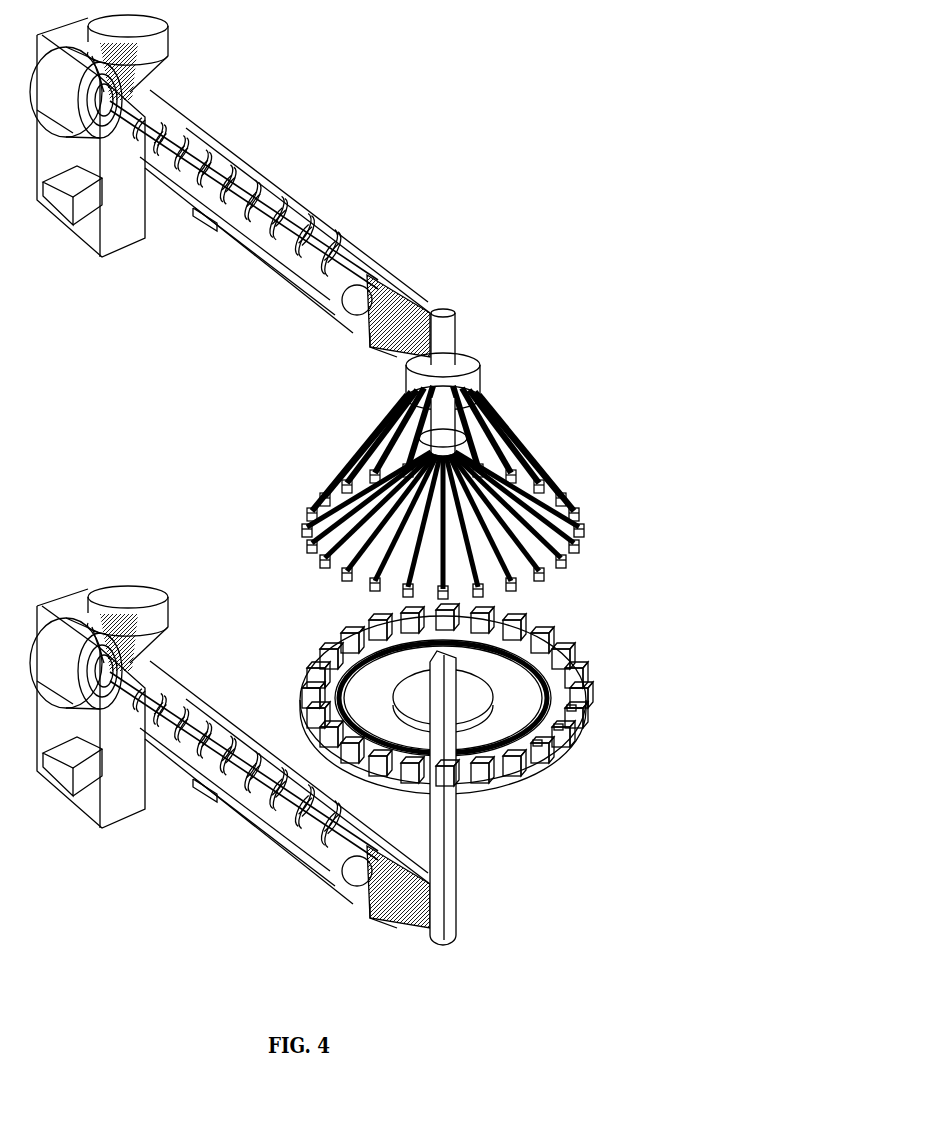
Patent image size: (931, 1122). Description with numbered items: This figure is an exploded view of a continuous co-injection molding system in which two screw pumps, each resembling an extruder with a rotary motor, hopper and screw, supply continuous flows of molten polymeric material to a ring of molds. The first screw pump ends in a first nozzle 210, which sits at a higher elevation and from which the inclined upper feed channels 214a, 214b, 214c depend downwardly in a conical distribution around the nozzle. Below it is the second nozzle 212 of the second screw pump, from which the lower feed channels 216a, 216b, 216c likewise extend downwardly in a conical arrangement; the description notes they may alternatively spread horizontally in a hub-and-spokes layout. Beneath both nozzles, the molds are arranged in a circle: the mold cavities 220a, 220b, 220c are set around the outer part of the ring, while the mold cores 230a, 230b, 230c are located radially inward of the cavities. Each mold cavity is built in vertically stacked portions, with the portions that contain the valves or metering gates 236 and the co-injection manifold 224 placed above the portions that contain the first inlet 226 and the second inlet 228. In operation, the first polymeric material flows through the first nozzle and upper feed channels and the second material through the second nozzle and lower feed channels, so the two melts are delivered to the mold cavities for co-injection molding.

The first nozzle 210 is at (437, 398).
The second nozzle 212 is at (437, 447).
The upper feed channel 214a is at (478, 458).
The upper feed channel 214b is at (497, 465).
The upper feed channel 214c is at (517, 472).
The lower feed channel 216a is at (485, 520).
The lower feed channel 216b is at (500, 511).
The lower feed channel 216c is at (490, 483).
The metering gate 236 is at (309, 528).
The co-injection manifold 224 is at (374, 579).
The first inlet 226 is at (377, 762).
The second inlet 228 is at (380, 772).
The mold cavity 220a is at (540, 755).
The mold cavity 220b is at (562, 737).
The mold cavity 220c is at (578, 733).
The mold core 230a is at (550, 727).
The mold core 230b is at (533, 730).
The mold core 230c is at (520, 738).